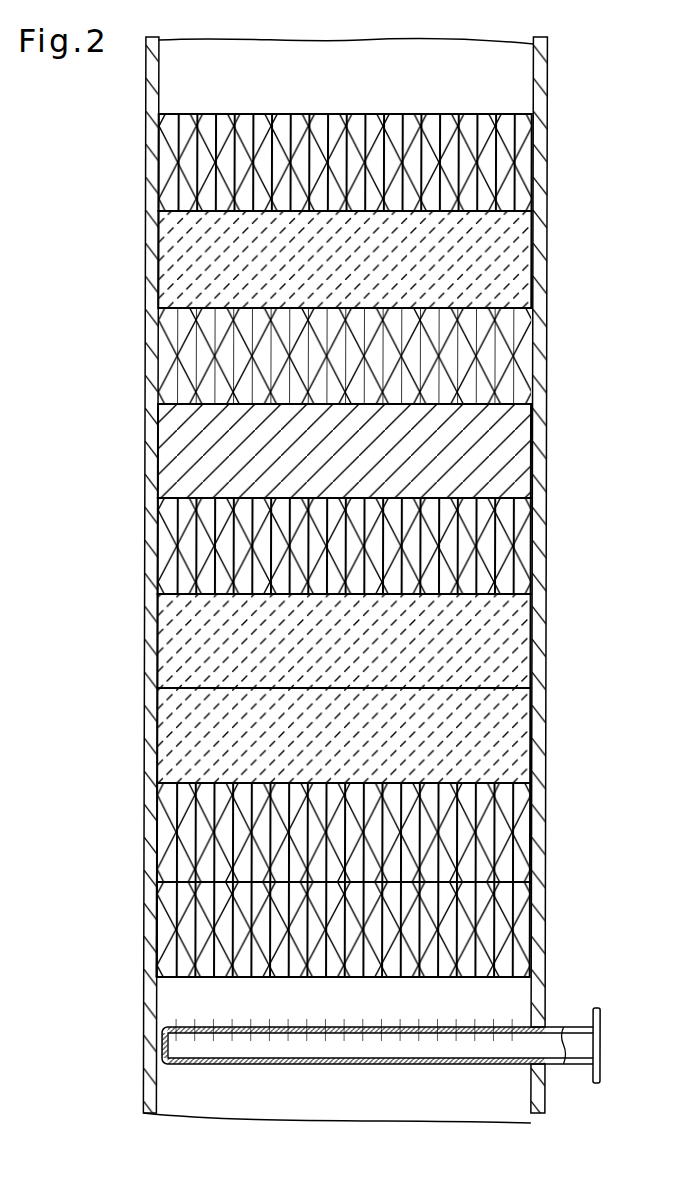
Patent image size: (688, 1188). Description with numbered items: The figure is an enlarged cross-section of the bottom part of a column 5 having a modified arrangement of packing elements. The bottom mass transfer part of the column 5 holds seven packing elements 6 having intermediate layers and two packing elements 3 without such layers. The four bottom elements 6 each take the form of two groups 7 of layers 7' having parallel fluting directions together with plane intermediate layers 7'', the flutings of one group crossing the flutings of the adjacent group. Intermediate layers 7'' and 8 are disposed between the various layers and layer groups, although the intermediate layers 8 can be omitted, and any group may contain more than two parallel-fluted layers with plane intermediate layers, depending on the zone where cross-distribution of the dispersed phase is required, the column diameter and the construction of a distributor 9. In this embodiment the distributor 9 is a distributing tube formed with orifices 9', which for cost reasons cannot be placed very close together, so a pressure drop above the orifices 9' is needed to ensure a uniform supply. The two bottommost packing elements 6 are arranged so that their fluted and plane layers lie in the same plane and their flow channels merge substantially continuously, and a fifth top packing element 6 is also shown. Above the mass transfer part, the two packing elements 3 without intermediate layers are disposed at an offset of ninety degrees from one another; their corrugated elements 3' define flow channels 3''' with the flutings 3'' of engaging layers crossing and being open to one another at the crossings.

The packing element 3 is at (382, 403).
The corrugated element 3' is at (375, 356).
The fluting 3'' is at (370, 317).
The flow channel 3''' is at (387, 408).
The column 5 is at (541, 727).
The packing element 6 is at (526, 135).
The group of layers 7 is at (369, 929).
The layer 7' is at (374, 975).
The plane intermediate layer 7'' is at (135, 929).
The intermediate layer 8 is at (190, 903).
The distributor 9 is at (381, 1058).
The orifice 9' is at (309, 1048).